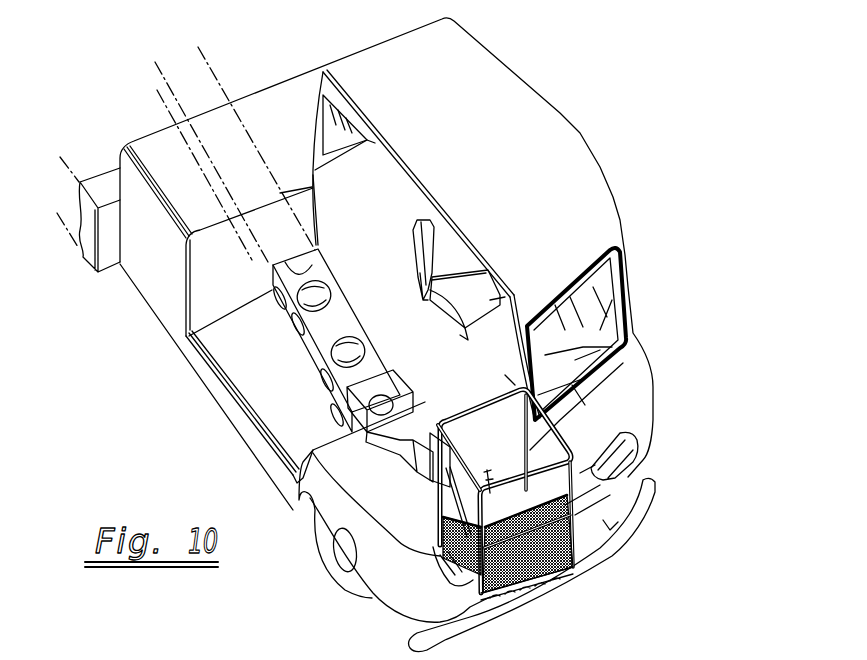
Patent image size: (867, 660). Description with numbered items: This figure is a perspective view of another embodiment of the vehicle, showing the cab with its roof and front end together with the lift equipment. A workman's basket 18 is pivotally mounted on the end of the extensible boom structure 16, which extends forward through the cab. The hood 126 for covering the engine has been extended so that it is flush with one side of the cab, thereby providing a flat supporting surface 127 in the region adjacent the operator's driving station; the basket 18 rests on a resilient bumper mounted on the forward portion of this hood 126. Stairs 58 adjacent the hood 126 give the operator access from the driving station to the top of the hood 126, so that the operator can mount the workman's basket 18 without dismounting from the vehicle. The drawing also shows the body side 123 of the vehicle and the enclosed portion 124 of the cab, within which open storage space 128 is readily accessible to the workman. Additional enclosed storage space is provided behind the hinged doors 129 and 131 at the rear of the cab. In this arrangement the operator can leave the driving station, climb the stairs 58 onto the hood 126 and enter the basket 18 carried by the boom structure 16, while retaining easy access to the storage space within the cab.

The enclosed portion of the cab 124 is at (560, 112).
The open storage space 128 is at (356, 198).
The hinged door 131 is at (313, 212).
The hinged door 129 is at (207, 255).
The extensible boom structure 16 is at (355, 308).
The stairs 58 is at (407, 357).
The hood 126 is at (447, 393).
The workman's basket 18 is at (470, 407).
The body side 123 is at (212, 402).
The flat supporting surface 127 is at (398, 502).